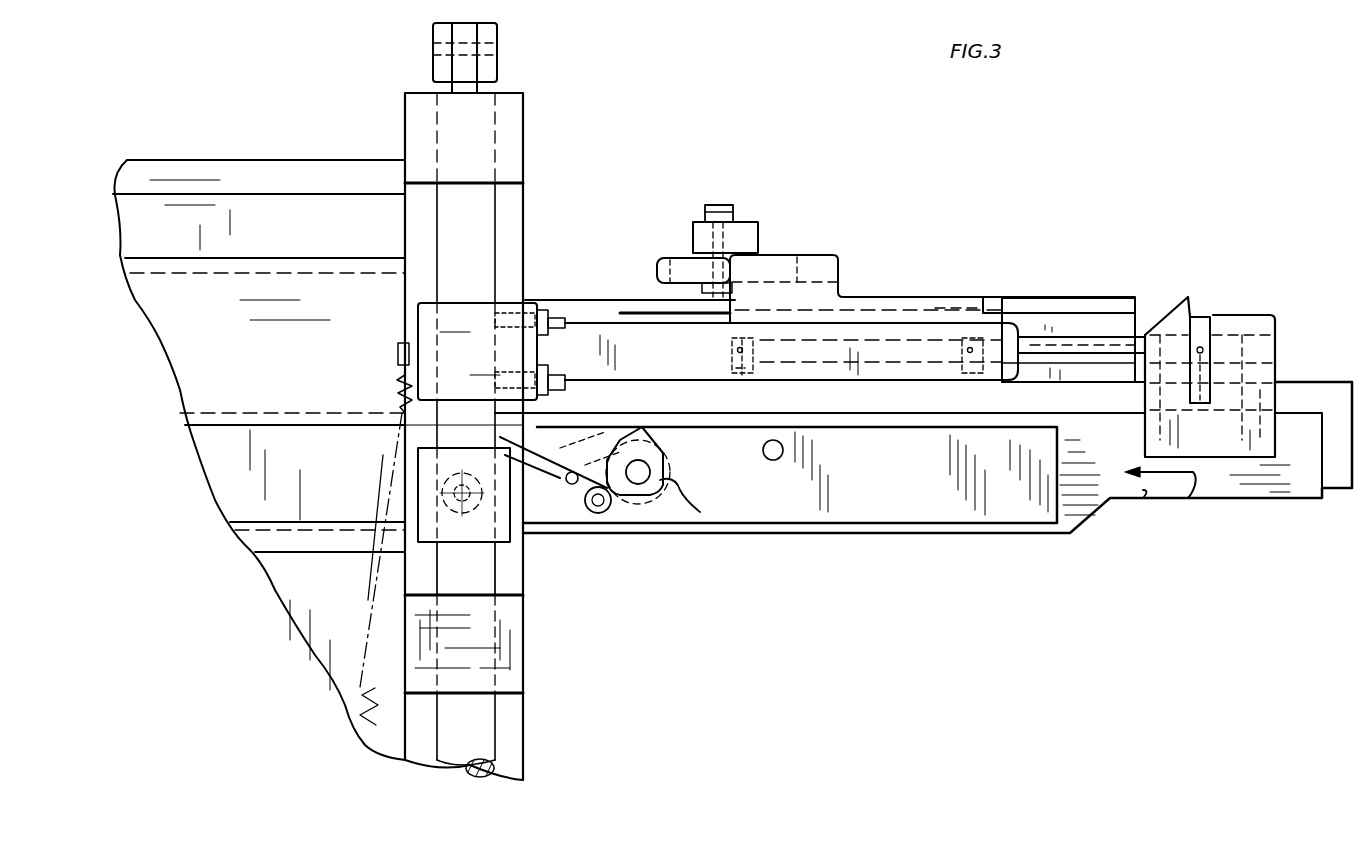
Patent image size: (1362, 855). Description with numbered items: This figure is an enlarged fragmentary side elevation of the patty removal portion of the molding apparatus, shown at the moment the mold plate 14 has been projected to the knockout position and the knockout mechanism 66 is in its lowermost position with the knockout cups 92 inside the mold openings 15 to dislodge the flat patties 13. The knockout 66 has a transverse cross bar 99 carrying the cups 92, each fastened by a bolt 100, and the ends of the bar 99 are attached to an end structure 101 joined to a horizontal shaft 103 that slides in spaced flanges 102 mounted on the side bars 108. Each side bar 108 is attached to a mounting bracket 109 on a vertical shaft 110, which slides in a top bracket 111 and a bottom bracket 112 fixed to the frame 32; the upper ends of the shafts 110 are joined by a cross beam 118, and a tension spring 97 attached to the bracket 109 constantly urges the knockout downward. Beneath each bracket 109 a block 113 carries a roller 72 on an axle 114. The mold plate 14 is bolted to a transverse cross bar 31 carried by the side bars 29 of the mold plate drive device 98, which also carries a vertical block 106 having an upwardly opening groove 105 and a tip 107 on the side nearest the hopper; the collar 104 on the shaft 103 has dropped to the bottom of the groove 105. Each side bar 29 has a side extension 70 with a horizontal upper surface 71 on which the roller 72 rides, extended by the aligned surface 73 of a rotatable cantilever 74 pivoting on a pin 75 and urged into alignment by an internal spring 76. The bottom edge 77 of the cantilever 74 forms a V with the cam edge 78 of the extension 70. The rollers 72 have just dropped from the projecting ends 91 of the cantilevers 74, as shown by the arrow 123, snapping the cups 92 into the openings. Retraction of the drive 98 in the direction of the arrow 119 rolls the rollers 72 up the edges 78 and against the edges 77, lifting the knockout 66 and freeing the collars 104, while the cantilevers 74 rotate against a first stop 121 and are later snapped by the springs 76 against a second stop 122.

The flat patties 13 is at (640, 390).
The movable mold 14 is at (1047, 300).
The circular shape 15 is at (624, 296).
The side bar 29 is at (1143, 490).
The transverse cross bar 31 is at (1080, 305).
The frame 32 is at (518, 738).
The knockout mechanism 66 is at (792, 257).
The side extension 70 is at (860, 473).
The horizontal upper surface 71 is at (720, 418).
The roller 72 is at (466, 568).
The aligned surface 73 is at (553, 422).
The rotatable cantilever 74 is at (645, 478).
The pin 75 is at (665, 475).
The internal spring 76 is at (670, 490).
The bottom edge 77 is at (545, 468).
The cam edge 78 is at (548, 483).
The end of projecting lever 91 is at (462, 438).
The knockout cups 92 is at (625, 288).
The tension spring 97 is at (398, 400).
The mold plate drive device 98 is at (1344, 502).
The cross bar 99 is at (693, 240).
The bolt 100 is at (722, 205).
The end structure 101 is at (770, 262).
The spaced flanges 102 is at (740, 380).
The horizontal shaft 103 is at (1112, 345).
The collar 104 is at (1208, 318).
The groove 105 is at (1210, 372).
The vertical block 106 is at (1270, 372).
The tip 107 is at (1190, 297).
The side bar 108 is at (690, 360).
The mounting bracket 109 is at (445, 320).
The vertical shaft 110 is at (455, 215).
The top bracket 111 is at (415, 103).
The bottom bracket 112 is at (515, 620).
The block 113 is at (425, 490).
The axle 114 is at (425, 475).
The cross beam 118 is at (497, 38).
The arrow 119 is at (1190, 483).
The first stop 121 is at (771, 462).
The second stop 122 is at (575, 490).
The arrow 123 is at (471, 444).